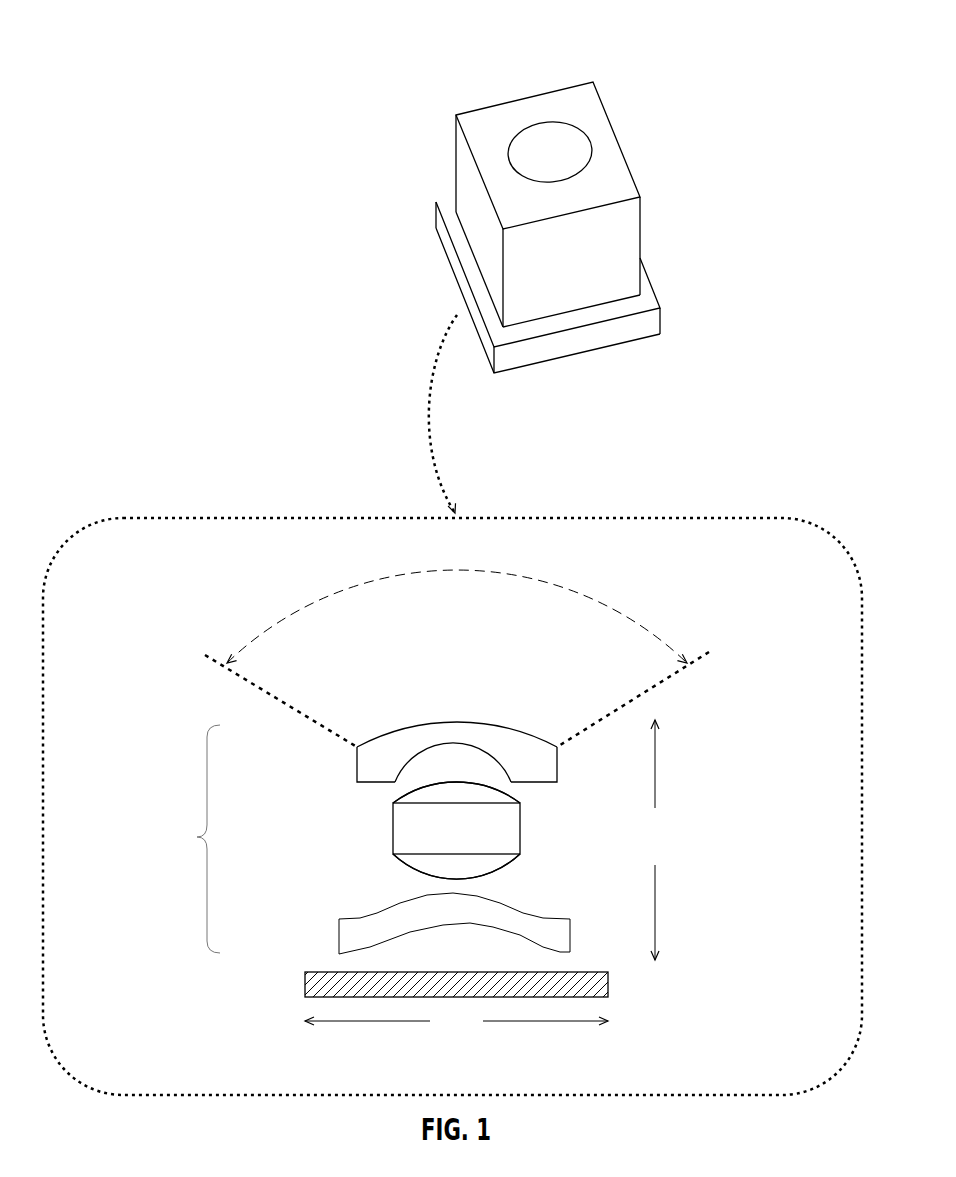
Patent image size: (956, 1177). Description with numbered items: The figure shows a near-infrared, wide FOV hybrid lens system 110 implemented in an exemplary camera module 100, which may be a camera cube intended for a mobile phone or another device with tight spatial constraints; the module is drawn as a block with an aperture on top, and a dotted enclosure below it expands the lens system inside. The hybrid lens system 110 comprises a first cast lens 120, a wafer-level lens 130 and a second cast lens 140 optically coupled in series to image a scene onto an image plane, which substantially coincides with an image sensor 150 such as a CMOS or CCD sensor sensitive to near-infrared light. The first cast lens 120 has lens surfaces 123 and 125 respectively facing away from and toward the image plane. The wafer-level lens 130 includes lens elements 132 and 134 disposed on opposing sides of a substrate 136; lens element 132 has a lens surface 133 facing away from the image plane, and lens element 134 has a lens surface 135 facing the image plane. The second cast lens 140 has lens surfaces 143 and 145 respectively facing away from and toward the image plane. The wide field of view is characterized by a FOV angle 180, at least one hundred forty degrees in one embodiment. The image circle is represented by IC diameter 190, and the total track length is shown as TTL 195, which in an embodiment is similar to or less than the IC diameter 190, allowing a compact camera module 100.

The camera module 100 is at (458, 98).
The near-infrared, wide FOV hybrid lens system 110 is at (197, 837).
The first cast lens 120 is at (461, 737).
The lens surface 123 is at (478, 718).
The lens surface 125 is at (489, 754).
The wafer-level lens 130 is at (426, 832).
The lens element 132 is at (408, 794).
The lens surface 133 is at (490, 783).
The lens element 134 is at (410, 866).
The lens surface 135 is at (508, 866).
The substrate 136 is at (471, 838).
The second cast lens 140 is at (480, 927).
The lens surface 143 is at (527, 912).
The lens surface 145 is at (481, 930).
The image sensor 150 is at (305, 983).
The FOV angle 180 is at (285, 618).
The IC diameter 190 is at (456, 1021).
The TTL 195 is at (654, 840).